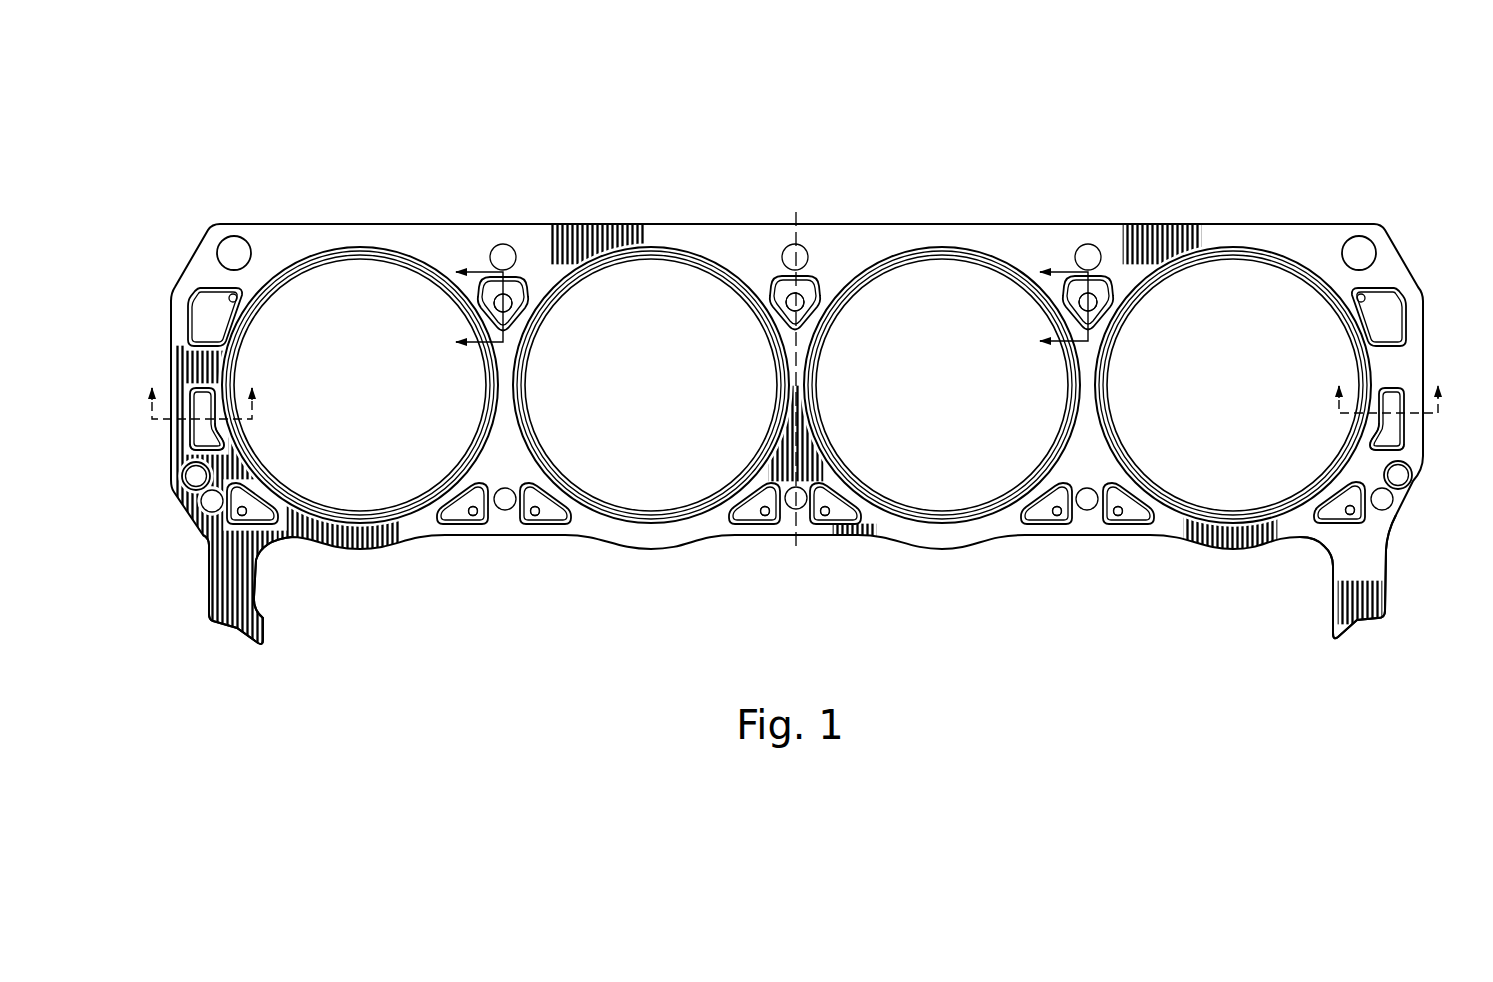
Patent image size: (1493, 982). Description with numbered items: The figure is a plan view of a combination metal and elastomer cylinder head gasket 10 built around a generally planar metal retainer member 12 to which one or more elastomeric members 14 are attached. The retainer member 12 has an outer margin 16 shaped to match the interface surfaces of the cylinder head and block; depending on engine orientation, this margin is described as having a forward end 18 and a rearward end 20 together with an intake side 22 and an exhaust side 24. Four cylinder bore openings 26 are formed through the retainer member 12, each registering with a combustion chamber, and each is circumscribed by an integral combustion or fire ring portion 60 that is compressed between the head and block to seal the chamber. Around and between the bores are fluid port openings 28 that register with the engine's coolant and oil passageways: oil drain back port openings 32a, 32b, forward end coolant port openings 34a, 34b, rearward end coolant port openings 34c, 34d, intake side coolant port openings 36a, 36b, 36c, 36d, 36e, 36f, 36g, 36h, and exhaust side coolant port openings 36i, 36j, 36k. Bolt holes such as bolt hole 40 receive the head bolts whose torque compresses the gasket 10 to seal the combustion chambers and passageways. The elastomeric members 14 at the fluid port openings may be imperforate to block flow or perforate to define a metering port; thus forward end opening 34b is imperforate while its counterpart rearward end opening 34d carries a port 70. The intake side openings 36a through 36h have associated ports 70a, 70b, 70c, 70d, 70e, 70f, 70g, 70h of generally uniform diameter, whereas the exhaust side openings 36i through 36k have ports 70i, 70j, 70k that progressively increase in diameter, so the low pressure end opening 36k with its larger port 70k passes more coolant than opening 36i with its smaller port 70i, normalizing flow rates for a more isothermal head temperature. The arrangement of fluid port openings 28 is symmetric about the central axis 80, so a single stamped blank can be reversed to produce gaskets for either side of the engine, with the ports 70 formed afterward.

The cylinder head gasket 10 is at (1163, 138).
The metal retainer member 12 is at (1331, 223).
The elastomeric member 14 is at (1392, 434).
The outer margin 16 is at (1348, 630).
The forward end 18 is at (1403, 491).
The rearward end 20 is at (200, 537).
The intake side 22 is at (1114, 537).
The exhaust side 24 is at (1201, 223).
The cylinder bore opening 26 is at (1240, 396).
The fluid port opening 28 is at (757, 282).
The oil drain back port opening 32a is at (1404, 495).
The oil drain back port opening 32b is at (172, 491).
The forward end coolant port opening 34a is at (1397, 289).
The forward end coolant port opening 34b is at (1399, 384).
The rearward end coolant port opening 34c is at (196, 290).
The rearward end coolant port opening 34d is at (194, 390).
The intake side coolant port opening 36a is at (1313, 523).
The intake side coolant port opening 36b is at (1103, 525).
The intake side coolant port opening 36c is at (1021, 523).
The intake side coolant port opening 36d is at (862, 523).
The intake side coolant port opening 36e is at (727, 517).
The intake side coolant port opening 36f is at (572, 525).
The intake side coolant port opening 36g is at (432, 528).
The intake side coolant port opening 36h is at (289, 525).
The exhaust side coolant port opening 36i is at (1060, 292).
The exhaust side coolant port opening 36j is at (820, 274).
The exhaust side coolant port opening 36k is at (478, 298).
The bolt hole 40 is at (786, 244).
The combustion ring portion 60 is at (1260, 249).
The port 70 is at (214, 437).
The port 70a is at (1348, 520).
The port 70b is at (1120, 520).
The port 70c is at (1056, 519).
The port 70d is at (828, 520).
The port 70e is at (764, 519).
The port 70f is at (535, 519).
The port 70g is at (473, 519).
The port 70h is at (243, 519).
The port 70i is at (1096, 299).
The port 70j is at (807, 300).
The port 70k is at (511, 299).
The central axis 80 is at (796, 548).